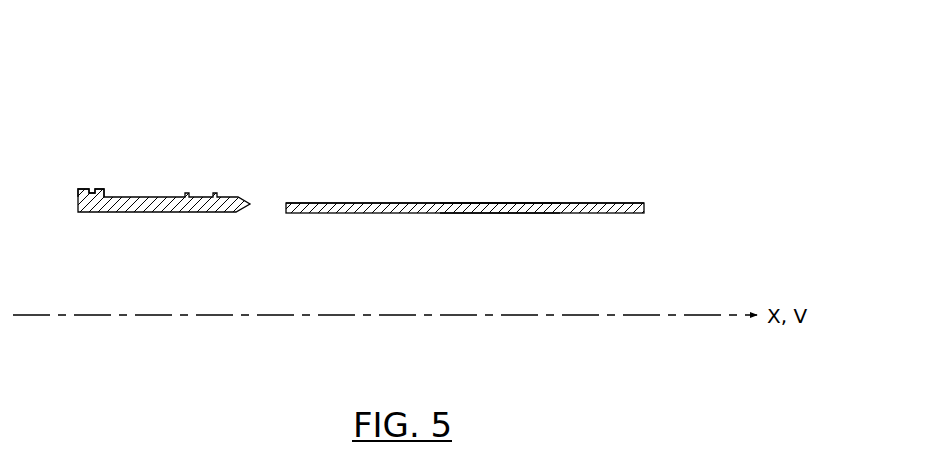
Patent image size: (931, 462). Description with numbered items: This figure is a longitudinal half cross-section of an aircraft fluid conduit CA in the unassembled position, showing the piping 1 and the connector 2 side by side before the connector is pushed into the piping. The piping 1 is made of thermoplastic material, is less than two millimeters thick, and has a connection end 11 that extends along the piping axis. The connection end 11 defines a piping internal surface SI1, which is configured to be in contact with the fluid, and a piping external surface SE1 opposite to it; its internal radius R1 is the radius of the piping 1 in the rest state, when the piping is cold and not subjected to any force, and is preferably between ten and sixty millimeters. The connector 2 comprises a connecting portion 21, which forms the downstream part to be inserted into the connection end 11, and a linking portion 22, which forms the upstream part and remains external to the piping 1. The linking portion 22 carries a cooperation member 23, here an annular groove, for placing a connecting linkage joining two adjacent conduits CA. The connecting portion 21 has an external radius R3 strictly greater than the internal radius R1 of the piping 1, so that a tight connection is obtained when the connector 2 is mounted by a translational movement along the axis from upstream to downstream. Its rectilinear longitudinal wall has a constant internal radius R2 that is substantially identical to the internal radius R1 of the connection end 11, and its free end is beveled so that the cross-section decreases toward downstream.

The piping 1 is at (467, 195).
The connection end 11 is at (342, 196).
The connector 2 is at (163, 197).
The connecting portion 21 is at (250, 226).
The linking portion 22 is at (109, 227).
The cooperation member 23 is at (96, 189).
The aircraft fluid conduit CA is at (259, 132).
The piping external surface SE1 is at (497, 199).
The piping internal surface SI1 is at (498, 216).
The internal radius of the connection end R1 is at (341, 214).
The internal radius of the rectilinear longitudinal wall R2 is at (227, 213).
The external radius of the connecting portion R3 is at (266, 201).